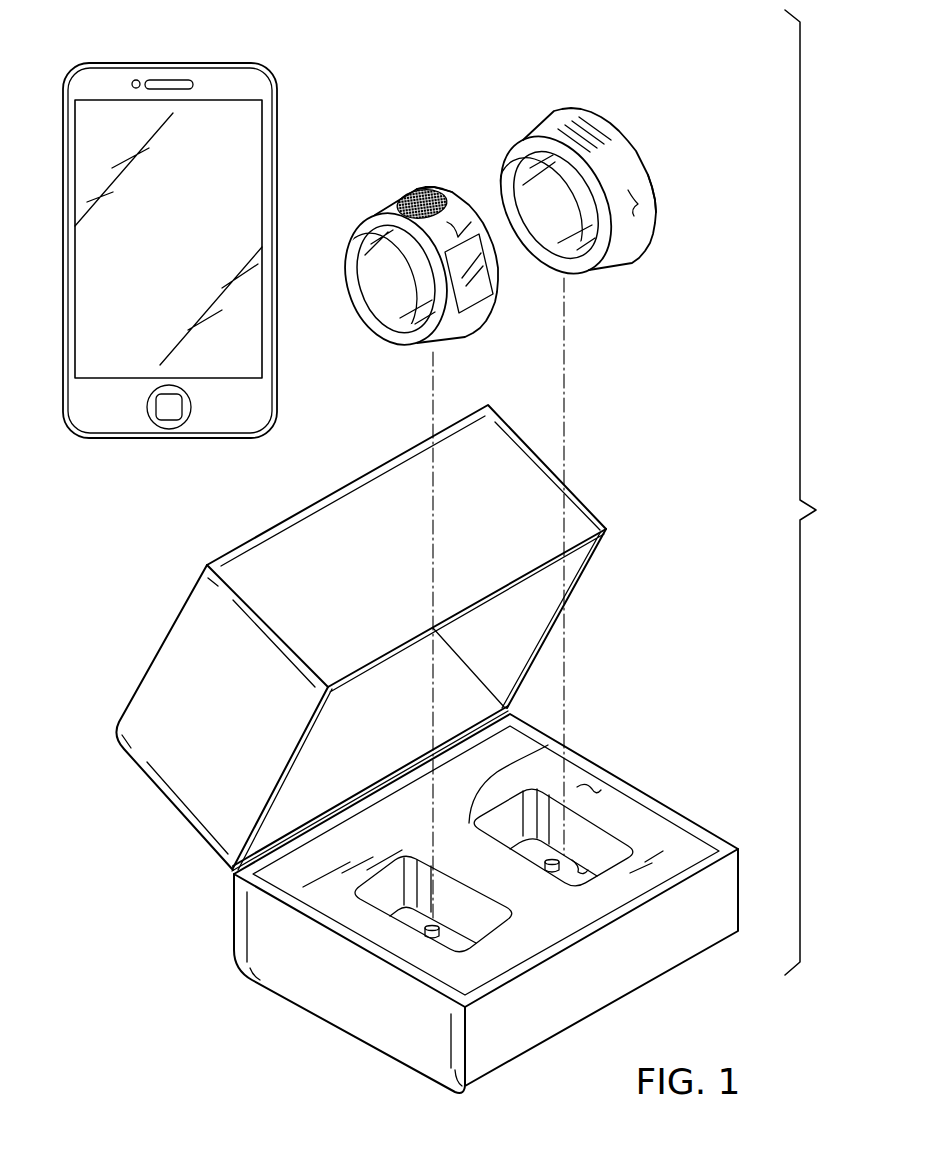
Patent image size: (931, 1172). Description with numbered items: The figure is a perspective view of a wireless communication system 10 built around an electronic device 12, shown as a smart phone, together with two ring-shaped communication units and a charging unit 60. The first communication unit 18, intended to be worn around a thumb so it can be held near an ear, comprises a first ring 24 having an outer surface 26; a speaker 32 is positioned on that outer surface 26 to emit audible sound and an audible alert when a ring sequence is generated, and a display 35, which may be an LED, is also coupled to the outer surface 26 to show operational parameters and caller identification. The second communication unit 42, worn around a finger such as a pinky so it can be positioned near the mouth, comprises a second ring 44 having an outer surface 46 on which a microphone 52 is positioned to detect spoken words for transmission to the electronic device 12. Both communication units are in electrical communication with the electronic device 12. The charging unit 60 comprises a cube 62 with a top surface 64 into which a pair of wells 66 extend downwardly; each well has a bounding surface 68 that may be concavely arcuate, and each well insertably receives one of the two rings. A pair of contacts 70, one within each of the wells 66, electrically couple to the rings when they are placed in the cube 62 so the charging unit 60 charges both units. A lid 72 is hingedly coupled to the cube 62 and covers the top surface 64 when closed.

The wireless communication system 10 is at (677, 89).
The electronic device 12 is at (279, 158).
The first communication unit 18 is at (421, 223).
The first ring 24 is at (440, 190).
The outer surface 26 is at (471, 222).
The speaker 32 is at (400, 194).
The display 35 is at (485, 303).
The second communication unit 42 is at (602, 157).
The second ring 44 is at (656, 182).
The outer surface 46 is at (640, 206).
The microphone 52 is at (586, 128).
The charging unit 60 is at (434, 749).
The cube 62 is at (733, 842).
The top surface 64 is at (586, 786).
The wells 66 is at (452, 884).
The bounding surface 68 is at (578, 860).
The contacts 70 is at (428, 938).
The lid 72 is at (569, 484).